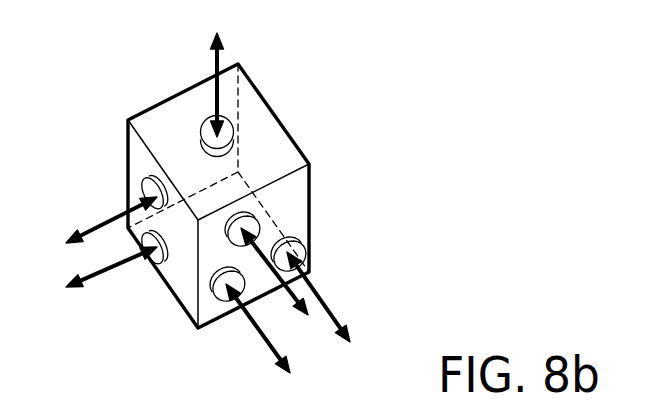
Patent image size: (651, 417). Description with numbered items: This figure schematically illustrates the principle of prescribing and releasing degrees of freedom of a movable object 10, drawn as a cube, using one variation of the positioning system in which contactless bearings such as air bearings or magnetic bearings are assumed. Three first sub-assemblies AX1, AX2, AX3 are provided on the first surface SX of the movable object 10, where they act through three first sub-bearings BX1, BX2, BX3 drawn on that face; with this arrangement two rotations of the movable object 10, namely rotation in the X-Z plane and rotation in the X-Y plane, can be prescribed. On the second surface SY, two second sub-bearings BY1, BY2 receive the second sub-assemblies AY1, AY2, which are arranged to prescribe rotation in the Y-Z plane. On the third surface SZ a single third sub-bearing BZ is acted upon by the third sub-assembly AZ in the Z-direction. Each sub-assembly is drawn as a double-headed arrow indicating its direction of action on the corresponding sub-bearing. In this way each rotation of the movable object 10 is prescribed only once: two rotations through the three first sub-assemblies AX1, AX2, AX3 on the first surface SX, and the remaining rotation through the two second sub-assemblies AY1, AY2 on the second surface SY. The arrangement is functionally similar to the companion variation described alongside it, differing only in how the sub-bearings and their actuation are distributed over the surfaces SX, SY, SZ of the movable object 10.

The movable object 10 is at (137, 152).
The third surface SZ is at (282, 151).
The first surface SX is at (301, 192).
The second surface SY is at (188, 305).
The third sub-bearing BZ is at (204, 120).
The third sub-assembly AZ is at (220, 72).
The first one of the second sub-bearings BY1 is at (147, 189).
The second one of the second sub-bearings BY2 is at (152, 260).
The first second sub-assembly AY1 is at (90, 228).
The second second sub-assembly AY2 is at (89, 277).
The first one of the first sub-bearings BX1 is at (222, 301).
The second one of the first sub-bearings BX2 is at (300, 255).
The third first sub-bearing BX3 is at (258, 222).
The first sub-assembly AX1 is at (267, 343).
The first sub-assembly AX2 is at (342, 308).
The first sub-assembly AX3 is at (281, 286).